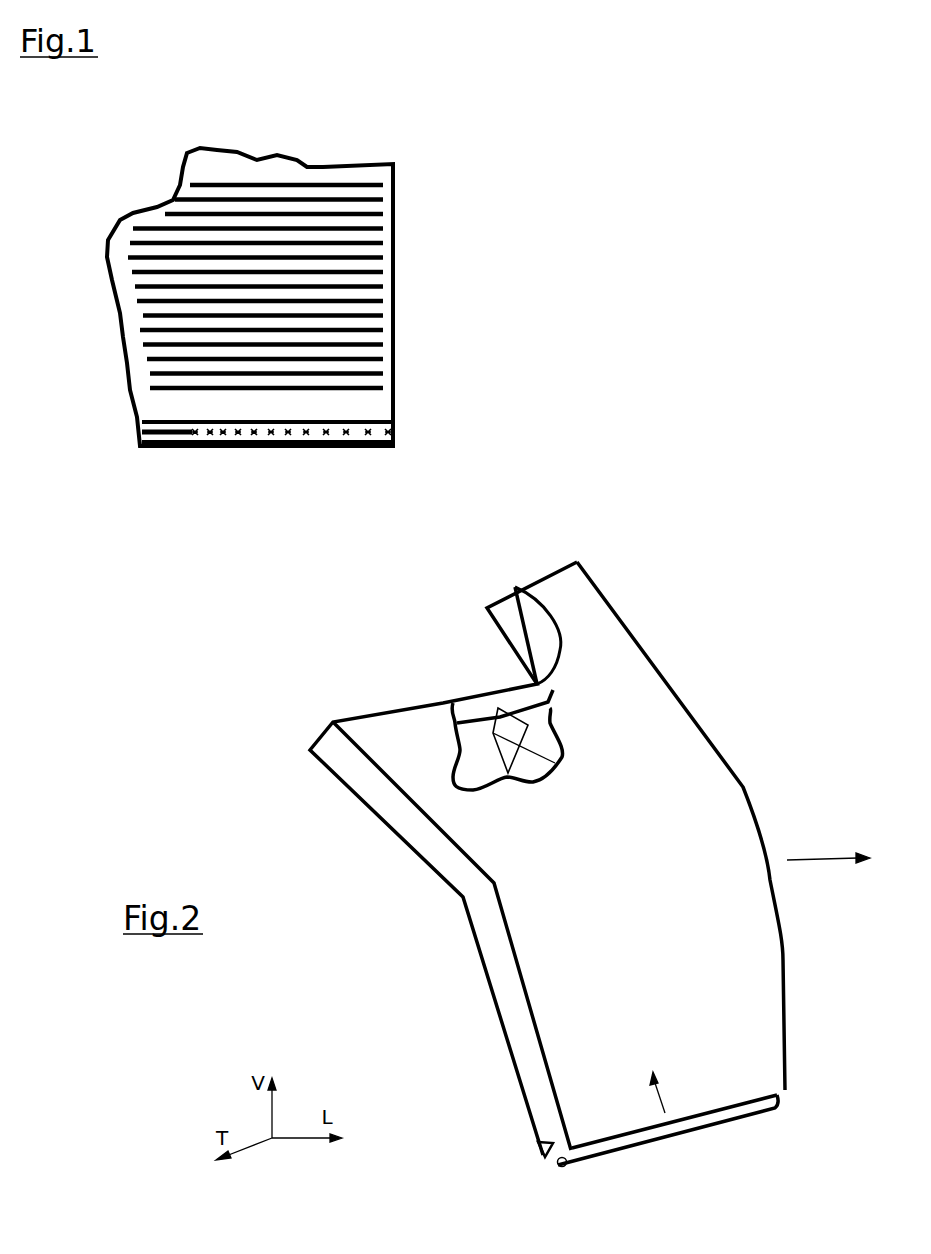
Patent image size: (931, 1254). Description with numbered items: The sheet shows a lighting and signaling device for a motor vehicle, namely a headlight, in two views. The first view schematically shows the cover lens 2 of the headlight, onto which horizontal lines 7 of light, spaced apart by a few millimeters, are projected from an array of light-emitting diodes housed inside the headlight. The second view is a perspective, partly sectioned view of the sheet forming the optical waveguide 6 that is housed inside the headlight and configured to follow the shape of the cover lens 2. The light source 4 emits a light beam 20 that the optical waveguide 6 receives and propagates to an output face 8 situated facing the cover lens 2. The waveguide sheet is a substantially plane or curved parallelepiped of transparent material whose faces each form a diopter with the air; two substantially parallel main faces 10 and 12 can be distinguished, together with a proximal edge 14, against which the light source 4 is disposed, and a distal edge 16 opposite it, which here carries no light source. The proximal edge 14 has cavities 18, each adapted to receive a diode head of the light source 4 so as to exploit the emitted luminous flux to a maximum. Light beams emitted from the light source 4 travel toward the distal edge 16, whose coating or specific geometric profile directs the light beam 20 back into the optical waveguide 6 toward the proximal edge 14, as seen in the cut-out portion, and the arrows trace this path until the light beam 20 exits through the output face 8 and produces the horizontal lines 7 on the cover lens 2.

In FIG. 1, the cover lens 2 is at (377, 412).
In FIG. 1, the light source 4 is at (260, 435).
In FIG. 2, the light source 4 is at (558, 1167).
In FIG. 1, the horizontal lines 7 is at (352, 297).
In FIG. 2, the optical waveguide 6 is at (662, 612).
In FIG. 2, the output face 8 is at (647, 722).
In FIG. 2, the main face 10 is at (678, 778).
In FIG. 2, the main face 12 is at (470, 969).
In FIG. 2, the proximal edge 14 is at (785, 1093).
In FIG. 2, the distal edge 16 is at (472, 713).
In FIG. 2, the cavities 18 is at (538, 1143).
In FIG. 2, the light beam 20 is at (507, 740).